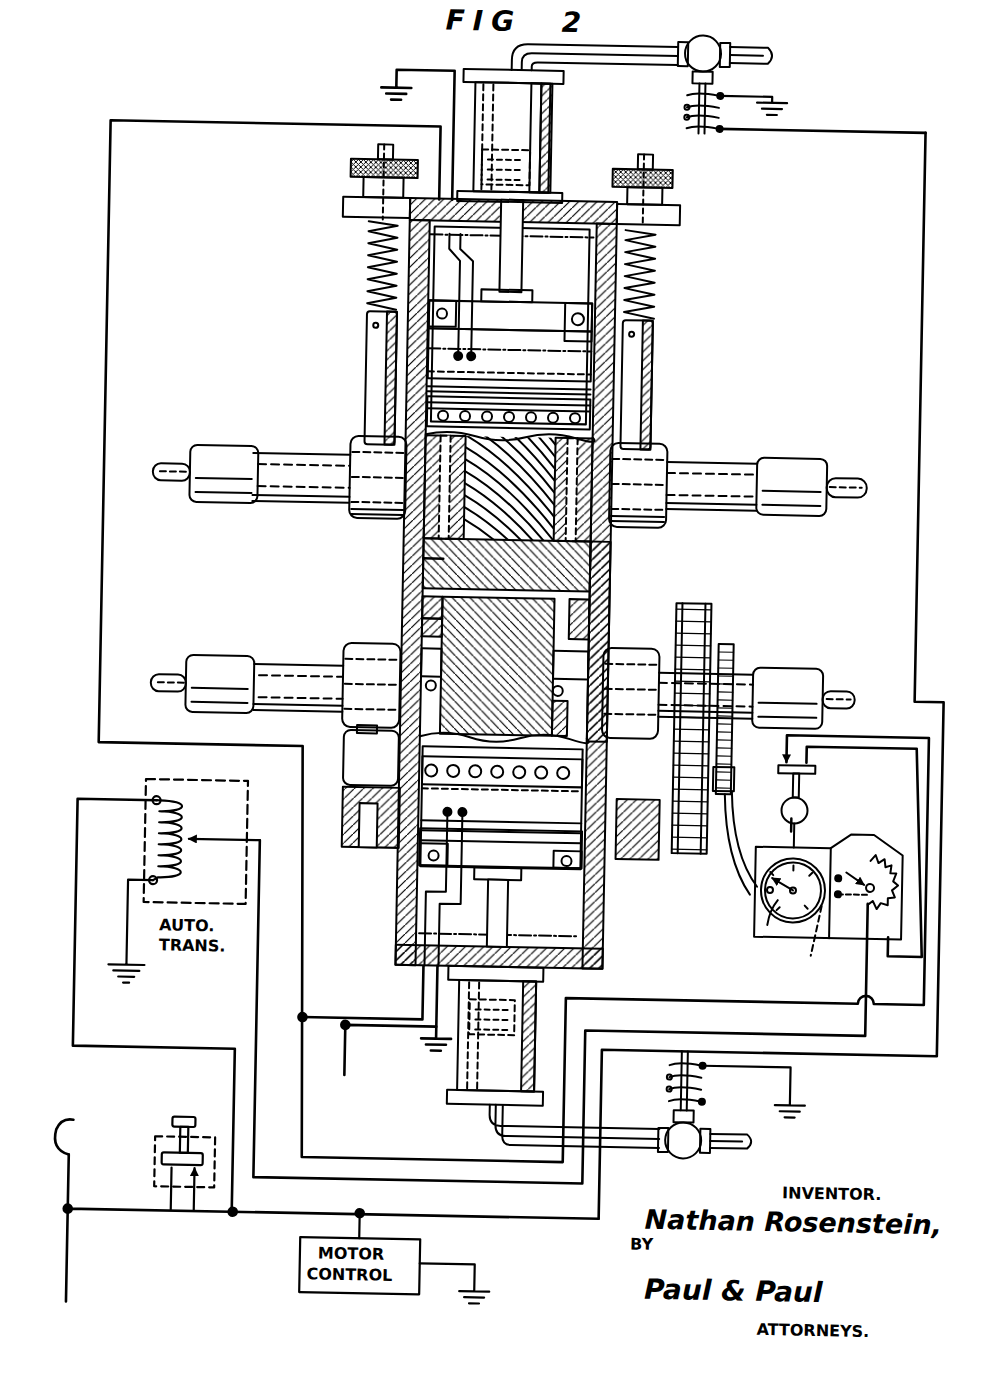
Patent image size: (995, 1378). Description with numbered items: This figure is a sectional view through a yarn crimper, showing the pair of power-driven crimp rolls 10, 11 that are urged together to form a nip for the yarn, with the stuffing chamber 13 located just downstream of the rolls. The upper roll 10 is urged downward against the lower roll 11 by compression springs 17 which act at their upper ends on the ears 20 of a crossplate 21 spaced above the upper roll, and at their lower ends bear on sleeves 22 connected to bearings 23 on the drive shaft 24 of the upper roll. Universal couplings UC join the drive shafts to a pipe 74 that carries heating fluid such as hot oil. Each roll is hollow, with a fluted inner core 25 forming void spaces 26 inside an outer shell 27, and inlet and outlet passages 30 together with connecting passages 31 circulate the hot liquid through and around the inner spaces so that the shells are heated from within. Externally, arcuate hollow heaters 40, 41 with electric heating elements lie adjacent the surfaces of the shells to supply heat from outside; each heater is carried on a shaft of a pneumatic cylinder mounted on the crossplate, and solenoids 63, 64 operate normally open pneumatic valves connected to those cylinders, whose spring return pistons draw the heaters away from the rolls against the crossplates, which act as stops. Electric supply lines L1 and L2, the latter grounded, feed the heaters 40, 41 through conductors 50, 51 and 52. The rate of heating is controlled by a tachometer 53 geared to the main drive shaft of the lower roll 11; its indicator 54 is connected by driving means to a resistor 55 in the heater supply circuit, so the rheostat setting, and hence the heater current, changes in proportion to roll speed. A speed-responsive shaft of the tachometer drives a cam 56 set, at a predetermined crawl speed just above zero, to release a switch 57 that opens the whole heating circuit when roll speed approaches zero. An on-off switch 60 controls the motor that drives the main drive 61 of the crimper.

The crimp roll 10 is at (648, 422).
The crimp roll 11 is at (410, 756).
The stuffing chamber 13 is at (618, 580).
The compression springs 17 is at (362, 277).
The ears 20 is at (340, 213).
The crossplate 21 is at (572, 200).
The sleeves 22 is at (378, 375).
The bearings 23 is at (352, 453).
The drive shaft 24 is at (278, 457).
The fluted inner core 25 is at (612, 553).
The void spaces 26 is at (430, 547).
The outer shell 27 is at (425, 587).
The inlet and outlet passages 30 is at (400, 730).
The connecting passages 31 is at (420, 638).
The heater 40 is at (512, 334).
The heater 41 is at (500, 857).
The conductor 50 is at (352, 1162).
The conductor 51 is at (104, 601).
The conductor 52 is at (340, 1021).
The tachometer 53 is at (768, 913).
The indicator 54 is at (776, 930).
The resistor 55 is at (888, 845).
The cam 56 is at (812, 810).
The switch 57 is at (821, 770).
The on-off switch 60 is at (184, 1146).
The main drive 61 is at (712, 600).
The solenoid 63 is at (690, 95).
The solenoid 64 is at (690, 1082).
The pipe 74 is at (165, 491).
The supply line L1 is at (68, 1127).
The supply line L2 is at (356, 1070).
The universal coupling UC is at (808, 467).